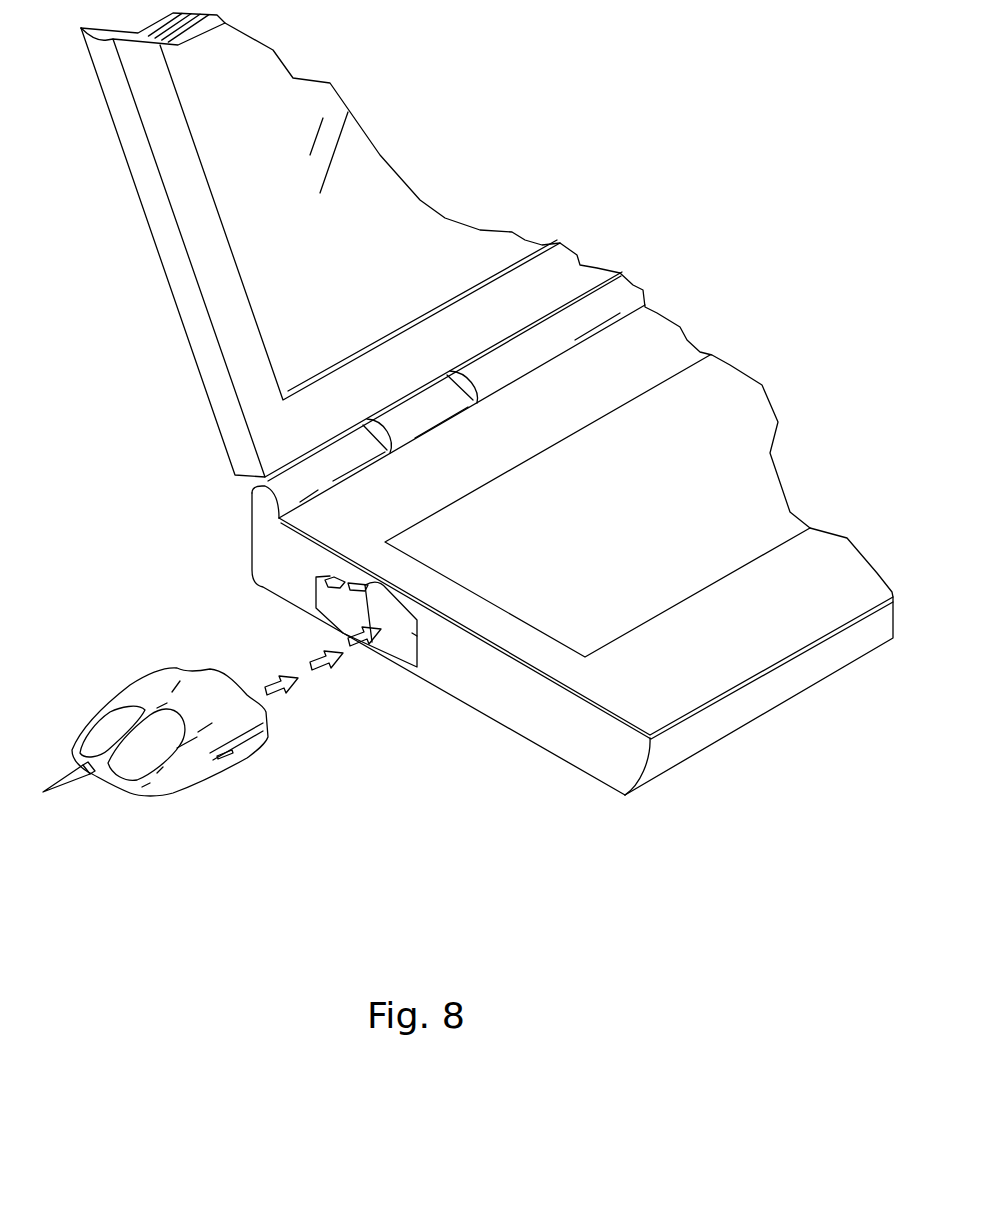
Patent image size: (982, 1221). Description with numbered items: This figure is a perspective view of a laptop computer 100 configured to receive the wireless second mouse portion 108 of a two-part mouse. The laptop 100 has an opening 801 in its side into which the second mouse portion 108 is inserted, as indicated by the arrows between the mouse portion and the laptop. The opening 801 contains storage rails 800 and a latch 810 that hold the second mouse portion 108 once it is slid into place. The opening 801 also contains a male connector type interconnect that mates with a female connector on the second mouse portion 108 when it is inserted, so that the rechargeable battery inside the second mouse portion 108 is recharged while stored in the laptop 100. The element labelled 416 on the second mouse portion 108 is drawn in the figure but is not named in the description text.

The laptop computer 100 is at (487, 404).
The second mouse portion 108 is at (155, 765).
The mouse cable plug 416 is at (58, 792).
The storage rails 800 is at (330, 586).
The opening 801 is at (397, 638).
The latch 810 is at (360, 580).